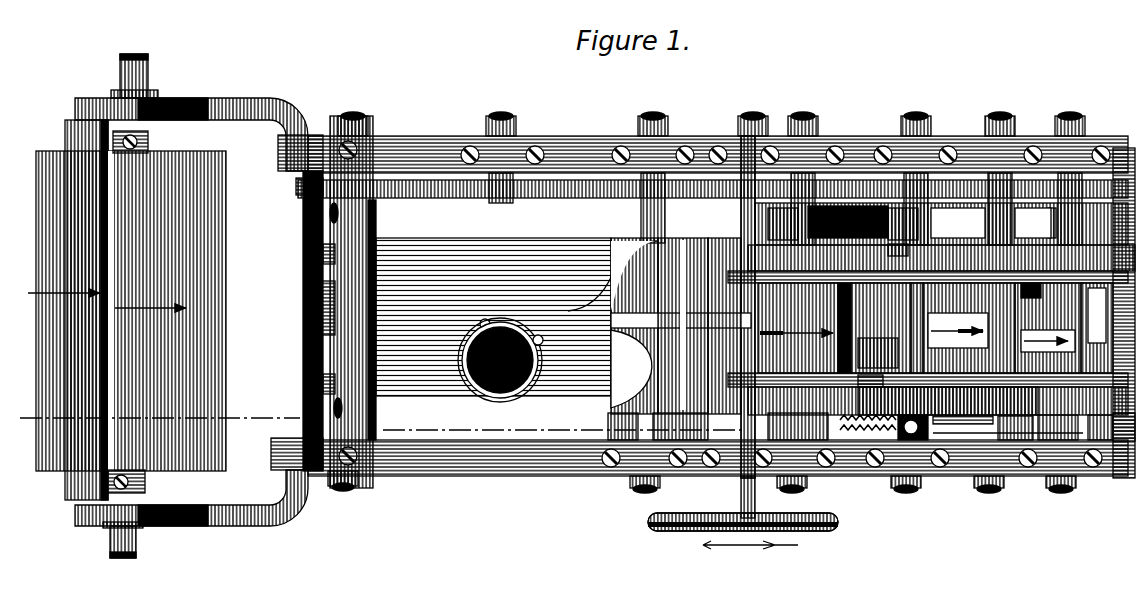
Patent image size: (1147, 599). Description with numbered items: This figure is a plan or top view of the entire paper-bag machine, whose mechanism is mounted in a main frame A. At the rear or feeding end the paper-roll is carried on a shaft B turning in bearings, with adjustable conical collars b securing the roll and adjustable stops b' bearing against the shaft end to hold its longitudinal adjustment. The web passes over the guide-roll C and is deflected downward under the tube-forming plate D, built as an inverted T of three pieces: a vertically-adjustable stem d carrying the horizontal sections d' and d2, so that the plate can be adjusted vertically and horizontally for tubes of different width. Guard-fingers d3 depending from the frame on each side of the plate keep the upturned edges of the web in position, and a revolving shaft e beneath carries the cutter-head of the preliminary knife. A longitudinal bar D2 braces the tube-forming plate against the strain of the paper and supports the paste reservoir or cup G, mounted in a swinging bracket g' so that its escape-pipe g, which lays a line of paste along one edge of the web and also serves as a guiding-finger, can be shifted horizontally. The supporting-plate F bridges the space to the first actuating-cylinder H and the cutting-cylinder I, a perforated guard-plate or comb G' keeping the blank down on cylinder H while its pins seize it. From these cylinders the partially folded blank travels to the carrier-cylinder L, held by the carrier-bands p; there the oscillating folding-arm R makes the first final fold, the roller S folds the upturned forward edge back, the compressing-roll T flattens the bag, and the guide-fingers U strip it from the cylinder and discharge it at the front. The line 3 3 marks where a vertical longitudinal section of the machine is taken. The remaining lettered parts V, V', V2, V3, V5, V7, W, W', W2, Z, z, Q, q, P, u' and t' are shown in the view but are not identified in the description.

The guide-roll C is at (127, 310).
The shaft B is at (135, 112).
The adjustable stops b' is at (129, 313).
The adjustable conical collars b is at (135, 312).
The line 3 3 is at (376, 420).
The tube-forming plate D is at (299, 321).
The bracket V3 is at (288, 178).
The horizontal piece or section d2 is at (296, 250).
The vertically-adjustable stem d is at (308, 308).
The horizontal piece or section d' is at (306, 385).
The guard-fingers d3 is at (331, 206).
The revolving shaft e is at (345, 490).
The main frame A is at (580, 150).
The cross bar V2 is at (523, 190).
The post V' is at (644, 177).
The rod V is at (747, 294).
The post V5 is at (935, 185).
The post V7 is at (1047, 195).
The supporting-plate F is at (493, 317).
The swinging or adjustable bracket g' is at (486, 312).
The paste reservoir or cup G is at (500, 370).
The feed-tube or escape-pipe g is at (547, 348).
The longitudinal bar D2 is at (545, 302).
The guard-plate or comb G' is at (681, 326).
The first actuating-cylinder H is at (683, 316).
The cutting-cylinder I is at (722, 240).
The wedge W is at (941, 235).
The wedge W2 is at (784, 237).
The wedge W' is at (883, 237).
The carrier-bands p is at (948, 329).
The bar Z is at (1120, 248).
The guide-fingers U is at (818, 382).
The compressing-roll T is at (742, 296).
The roller S is at (796, 323).
The oscillating folding-arm R is at (900, 304).
The carrier-cylinder L is at (878, 353).
The block Q is at (1048, 328).
The pin q is at (1043, 281).
The bar P is at (938, 401).
The lug u' is at (870, 388).
The catch t' is at (1058, 418).
The stop z is at (1146, 437).